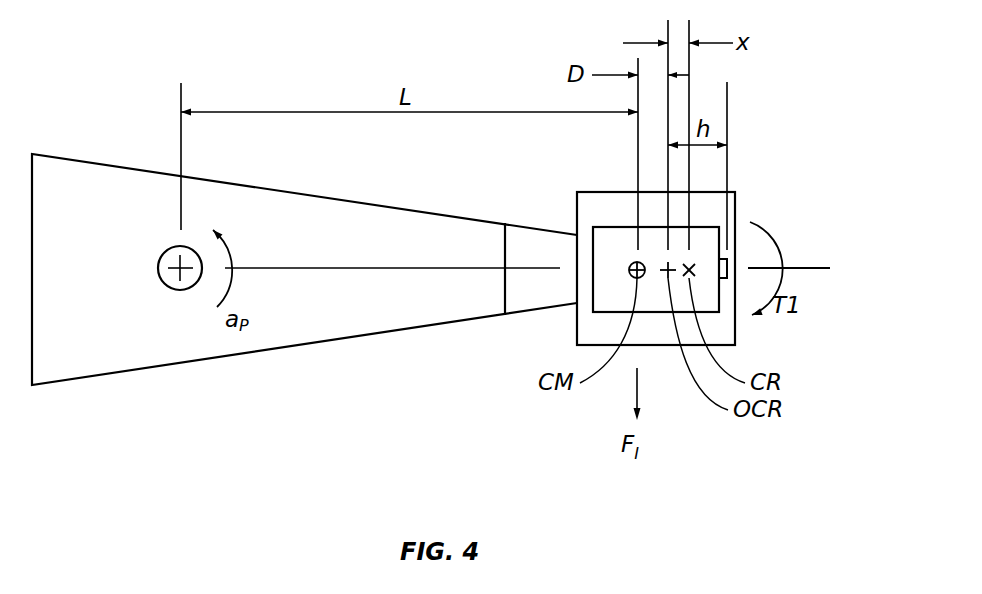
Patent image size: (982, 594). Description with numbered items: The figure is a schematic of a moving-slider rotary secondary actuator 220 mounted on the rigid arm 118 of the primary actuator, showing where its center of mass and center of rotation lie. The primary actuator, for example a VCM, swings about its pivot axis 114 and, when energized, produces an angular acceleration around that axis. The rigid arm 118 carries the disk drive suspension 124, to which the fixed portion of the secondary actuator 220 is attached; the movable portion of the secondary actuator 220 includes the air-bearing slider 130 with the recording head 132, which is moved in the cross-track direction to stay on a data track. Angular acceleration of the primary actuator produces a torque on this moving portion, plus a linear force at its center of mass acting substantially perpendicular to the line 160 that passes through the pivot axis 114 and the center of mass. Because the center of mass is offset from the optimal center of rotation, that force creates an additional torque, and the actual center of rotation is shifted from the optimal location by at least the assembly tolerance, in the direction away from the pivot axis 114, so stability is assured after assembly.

The pivot axis 114 is at (170, 264).
The actuator arm 118 is at (305, 336).
The disk drive suspension 124 is at (535, 298).
The air-bearing slider 130 is at (592, 228).
The recording head 132 is at (727, 268).
The line 160 is at (812, 263).
The secondary actuator 220 is at (605, 198).